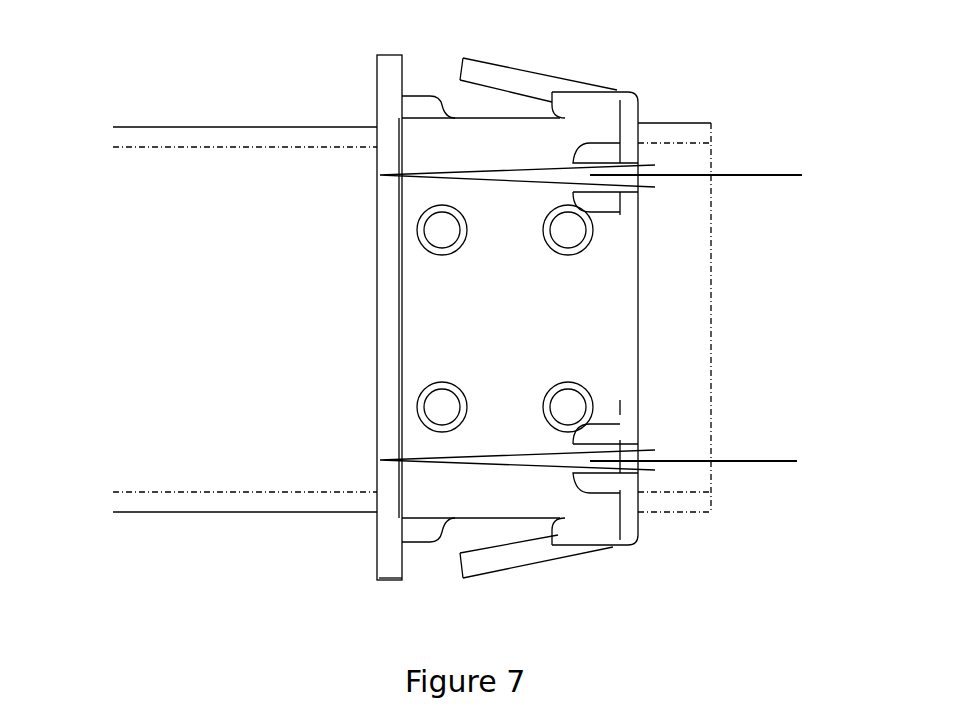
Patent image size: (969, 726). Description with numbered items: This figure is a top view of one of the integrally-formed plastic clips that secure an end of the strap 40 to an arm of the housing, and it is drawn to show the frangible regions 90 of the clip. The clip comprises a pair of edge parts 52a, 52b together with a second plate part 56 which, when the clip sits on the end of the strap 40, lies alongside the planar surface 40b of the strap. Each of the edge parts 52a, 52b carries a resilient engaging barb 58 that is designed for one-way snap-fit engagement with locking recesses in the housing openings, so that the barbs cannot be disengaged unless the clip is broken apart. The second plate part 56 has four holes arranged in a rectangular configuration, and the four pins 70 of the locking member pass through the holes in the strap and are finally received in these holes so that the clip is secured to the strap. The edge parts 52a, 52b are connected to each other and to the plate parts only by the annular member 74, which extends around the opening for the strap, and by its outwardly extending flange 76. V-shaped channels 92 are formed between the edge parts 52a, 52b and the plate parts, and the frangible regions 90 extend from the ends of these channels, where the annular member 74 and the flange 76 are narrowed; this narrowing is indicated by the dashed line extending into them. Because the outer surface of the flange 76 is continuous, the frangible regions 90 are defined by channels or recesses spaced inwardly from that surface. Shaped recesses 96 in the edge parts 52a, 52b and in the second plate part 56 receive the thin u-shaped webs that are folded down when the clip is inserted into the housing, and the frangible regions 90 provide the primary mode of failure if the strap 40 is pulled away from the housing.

The strap 40 is at (677, 377).
The planar surface of the strap 40b is at (188, 445).
The edge part 52a is at (595, 512).
The edge part 52b is at (570, 130).
The second plate part 56 is at (505, 408).
The resilient engaging barb 58 is at (507, 78).
The pins 70 is at (568, 407).
The annular member 74 is at (373, 363).
The flange 76 is at (392, 560).
The frangible regions 90 is at (377, 172).
The v-shaped channels 92 is at (723, 313).
The recesses 96 is at (620, 152).